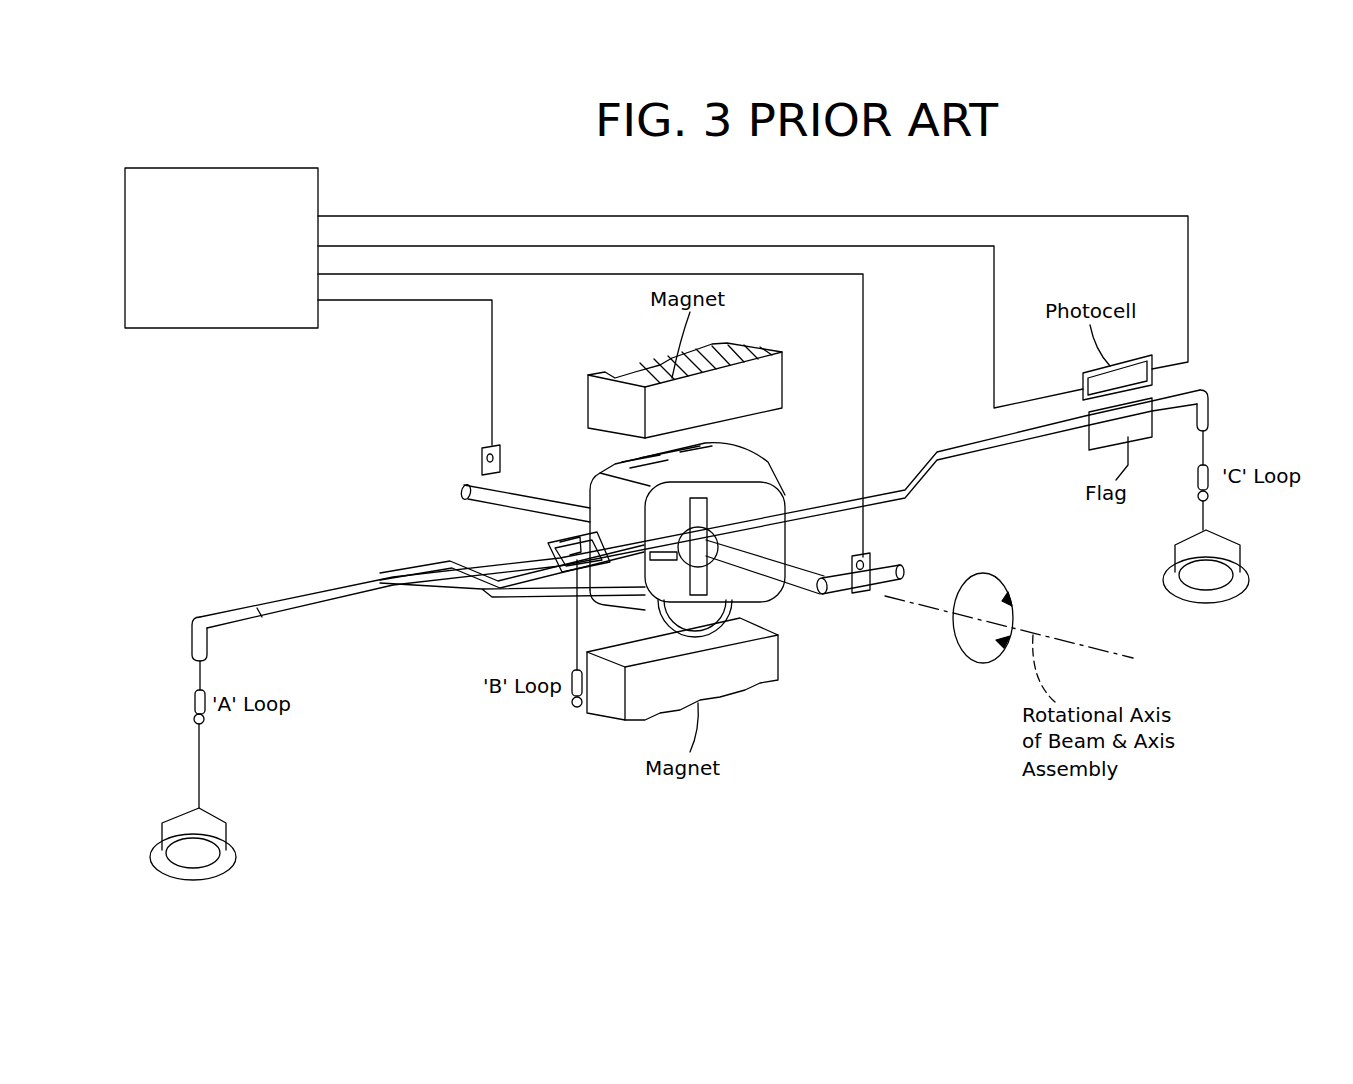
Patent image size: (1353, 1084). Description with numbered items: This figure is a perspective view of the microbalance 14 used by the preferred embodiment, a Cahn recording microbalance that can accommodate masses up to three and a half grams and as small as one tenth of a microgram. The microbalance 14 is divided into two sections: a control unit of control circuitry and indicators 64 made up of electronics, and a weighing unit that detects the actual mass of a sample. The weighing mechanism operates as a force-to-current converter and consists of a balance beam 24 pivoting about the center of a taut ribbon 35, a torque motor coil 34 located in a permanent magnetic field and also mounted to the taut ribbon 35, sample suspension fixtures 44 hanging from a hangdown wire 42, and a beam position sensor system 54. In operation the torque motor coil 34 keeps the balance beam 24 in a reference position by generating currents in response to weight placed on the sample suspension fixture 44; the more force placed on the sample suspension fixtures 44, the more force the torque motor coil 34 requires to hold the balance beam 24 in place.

The microbalance 14 is at (778, 722).
The balance beam 24 is at (420, 568).
The torque motor coil 34 is at (770, 480).
The taut ribbon 35 is at (548, 503).
The hangdown wire 42 is at (199, 752).
The sample suspension fixture 44 is at (236, 868).
The beam position sensor system 54 is at (1185, 377).
The control circuitry and indicators 64 is at (248, 168).